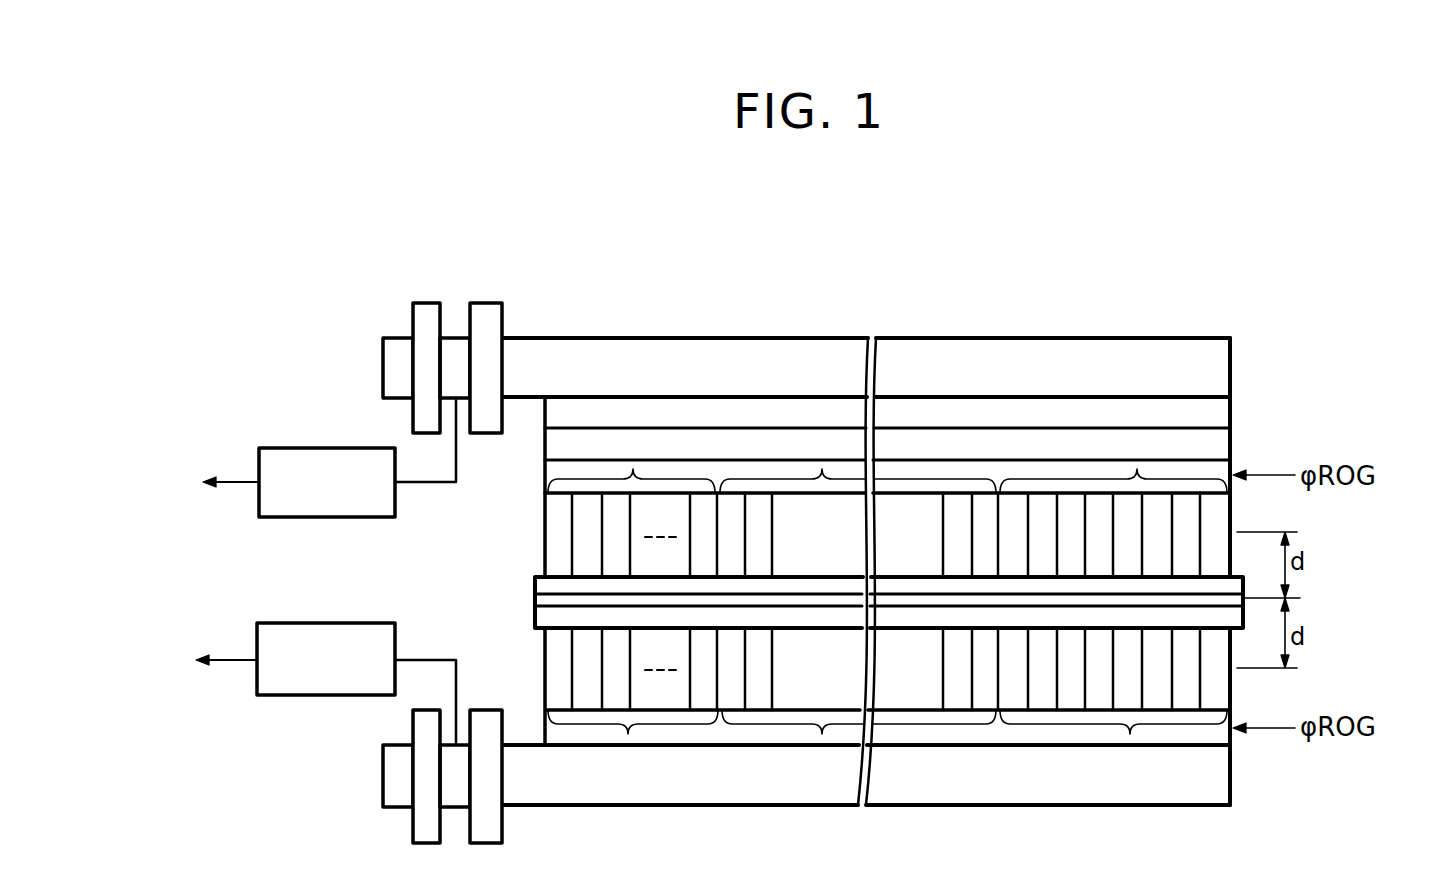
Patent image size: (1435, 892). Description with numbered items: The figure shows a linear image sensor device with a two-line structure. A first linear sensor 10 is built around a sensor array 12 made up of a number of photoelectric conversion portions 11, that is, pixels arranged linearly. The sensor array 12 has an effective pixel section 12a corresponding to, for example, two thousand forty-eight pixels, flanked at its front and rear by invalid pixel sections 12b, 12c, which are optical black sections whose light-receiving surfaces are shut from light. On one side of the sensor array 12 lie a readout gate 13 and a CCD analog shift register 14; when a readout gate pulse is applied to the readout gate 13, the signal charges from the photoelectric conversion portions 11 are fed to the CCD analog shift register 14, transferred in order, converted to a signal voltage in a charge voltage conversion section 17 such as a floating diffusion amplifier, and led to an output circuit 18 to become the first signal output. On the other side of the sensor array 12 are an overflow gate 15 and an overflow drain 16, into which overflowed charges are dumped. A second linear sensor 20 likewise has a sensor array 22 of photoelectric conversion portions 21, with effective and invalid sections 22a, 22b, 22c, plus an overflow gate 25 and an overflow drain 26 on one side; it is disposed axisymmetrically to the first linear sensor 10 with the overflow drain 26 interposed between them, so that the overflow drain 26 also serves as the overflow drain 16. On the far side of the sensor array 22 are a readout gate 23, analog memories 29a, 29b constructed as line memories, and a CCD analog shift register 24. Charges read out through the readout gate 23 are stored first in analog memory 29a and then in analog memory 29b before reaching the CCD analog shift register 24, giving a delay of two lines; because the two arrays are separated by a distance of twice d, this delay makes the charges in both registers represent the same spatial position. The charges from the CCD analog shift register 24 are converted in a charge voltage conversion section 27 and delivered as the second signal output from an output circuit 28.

The first linear sensor 10 is at (1245, 765).
The photoelectric conversion portion 11 is at (733, 706).
The sensor array 12 is at (898, 752).
The effective pixel section 12a is at (820, 735).
The invalid pixel section 12b is at (626, 735).
The invalid pixel section 12c is at (1130, 735).
The readout gate 13 is at (766, 742).
The CCD analog shift register 14 is at (1047, 790).
The overflow gate 15 is at (1222, 640).
The overflow drain 16 is at (985, 602).
The charge voltage conversion section 17 is at (400, 818).
The output circuit 18 is at (328, 623).
The second linear sensor 20 is at (1295, 358).
The photoelectric conversion portion 21 is at (733, 500).
The sensor array 22 is at (885, 416).
The effective pixel section 22a is at (822, 468).
The invalid pixel section 22b is at (633, 468).
The invalid pixel section 22c is at (1137, 468).
The readout gate 23 is at (847, 467).
The CCD analog shift register 24 is at (1050, 348).
The overflow gate 25 is at (1220, 575).
The overflow drain 26 is at (1243, 599).
The charge voltage conversion section 27 is at (507, 297).
The output circuit 28 is at (330, 448).
The analog memory 29a is at (1225, 441).
The analog memory 29b is at (1222, 412).